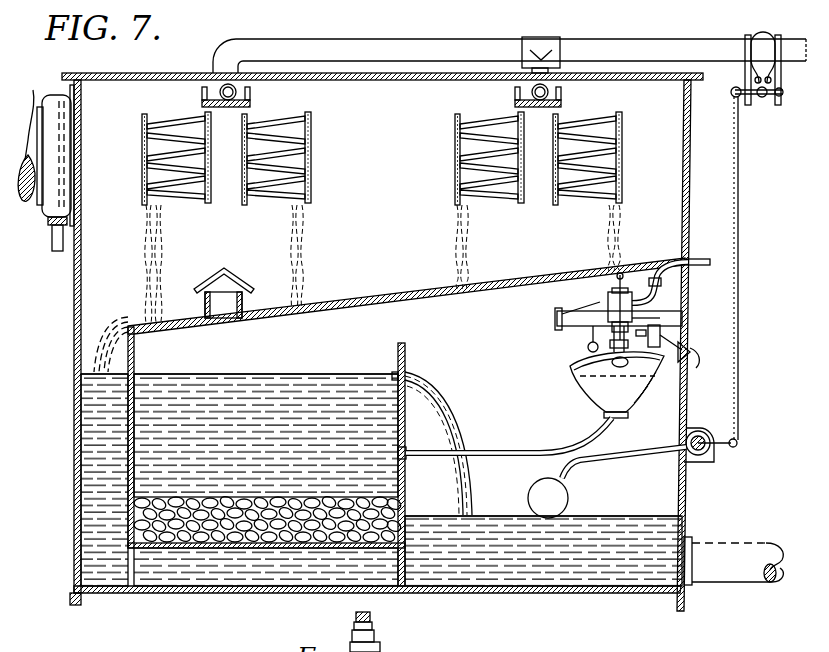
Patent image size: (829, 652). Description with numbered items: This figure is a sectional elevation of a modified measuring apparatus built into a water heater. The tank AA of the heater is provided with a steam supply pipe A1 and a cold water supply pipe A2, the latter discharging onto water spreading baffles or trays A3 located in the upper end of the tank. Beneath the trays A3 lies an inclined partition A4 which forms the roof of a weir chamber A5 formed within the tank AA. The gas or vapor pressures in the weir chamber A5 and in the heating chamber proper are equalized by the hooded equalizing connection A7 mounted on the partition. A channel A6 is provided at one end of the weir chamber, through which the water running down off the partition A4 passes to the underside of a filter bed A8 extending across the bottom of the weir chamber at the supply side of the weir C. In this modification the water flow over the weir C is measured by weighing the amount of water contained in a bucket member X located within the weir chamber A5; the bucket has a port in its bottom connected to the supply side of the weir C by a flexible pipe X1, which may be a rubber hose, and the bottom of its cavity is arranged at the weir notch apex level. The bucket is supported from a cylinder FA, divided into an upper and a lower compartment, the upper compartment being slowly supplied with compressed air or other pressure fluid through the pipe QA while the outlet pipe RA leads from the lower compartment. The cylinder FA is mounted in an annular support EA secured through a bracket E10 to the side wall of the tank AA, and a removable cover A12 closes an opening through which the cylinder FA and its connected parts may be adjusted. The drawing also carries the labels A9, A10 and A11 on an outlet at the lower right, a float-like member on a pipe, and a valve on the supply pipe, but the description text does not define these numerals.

The steam supply pipe A1 is at (45, 266).
The cold water supply pipe A2 is at (318, 40).
The water spreading baffles or trays A3 is at (210, 186).
The inclined partition A4 is at (375, 300).
The weir chamber A5 is at (456, 327).
The channel A6 is at (88, 420).
The hooded equalizing connection A7 is at (224, 308).
The filter bed A8 is at (200, 548).
The outlet pipe A9 is at (733, 561).
The float A10 is at (570, 497).
The supply valve A11 is at (763, 33).
The removable cover A12 is at (687, 294).
The tank AA is at (74, 350).
The weir C is at (402, 575).
The bracket E10 is at (698, 360).
The annular support EA is at (558, 320).
The cylinder FA is at (610, 313).
The pipe QA is at (700, 259).
The outlet pipe RA is at (592, 334).
The bucket member X is at (596, 388).
The flexible pipe X1 is at (510, 450).